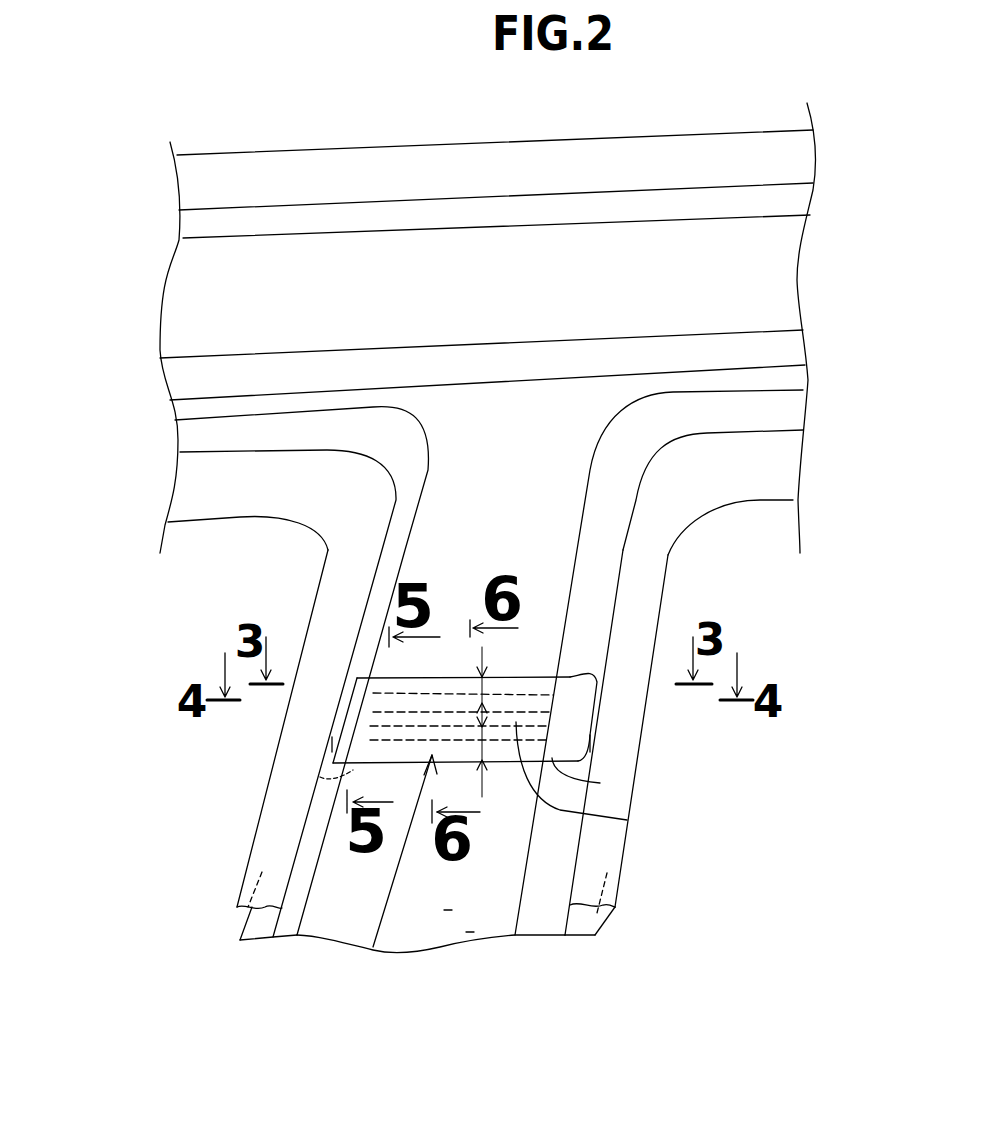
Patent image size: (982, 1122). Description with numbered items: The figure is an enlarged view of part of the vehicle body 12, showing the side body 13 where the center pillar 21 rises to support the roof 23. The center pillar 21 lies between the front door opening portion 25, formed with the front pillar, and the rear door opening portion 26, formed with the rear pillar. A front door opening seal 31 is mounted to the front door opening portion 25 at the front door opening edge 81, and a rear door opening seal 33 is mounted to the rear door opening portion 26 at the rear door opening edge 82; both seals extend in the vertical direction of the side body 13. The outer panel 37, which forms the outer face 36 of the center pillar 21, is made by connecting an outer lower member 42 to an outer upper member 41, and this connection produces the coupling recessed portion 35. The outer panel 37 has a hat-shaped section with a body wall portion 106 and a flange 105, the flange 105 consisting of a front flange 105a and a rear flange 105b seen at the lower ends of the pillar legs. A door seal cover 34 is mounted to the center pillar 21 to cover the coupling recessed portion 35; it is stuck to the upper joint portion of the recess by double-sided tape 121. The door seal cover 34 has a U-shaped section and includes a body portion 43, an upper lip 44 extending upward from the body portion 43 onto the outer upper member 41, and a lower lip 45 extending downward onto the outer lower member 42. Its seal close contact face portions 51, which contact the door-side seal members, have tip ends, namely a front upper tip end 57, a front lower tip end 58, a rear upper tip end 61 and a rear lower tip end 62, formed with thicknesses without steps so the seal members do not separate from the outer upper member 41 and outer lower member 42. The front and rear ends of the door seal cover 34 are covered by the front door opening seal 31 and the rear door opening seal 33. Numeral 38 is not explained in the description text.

The vehicle body 12 is at (141, 298).
The side body 13 is at (163, 635).
The center pillar 21 is at (373, 987).
The roof 23 is at (325, 143).
The front door opening portion 25 is at (198, 523).
The rear door opening portion 26 is at (767, 503).
The front door opening seal 31 is at (257, 798).
The rear door opening seal 33 is at (627, 850).
The door seal cover 34 is at (445, 675).
The coupling recessed portion 35 is at (367, 943).
The outer face 36 is at (448, 910).
The outer panel 37 is at (497, 937).
The upper dashed line 38 is at (452, 683).
The outer upper member 41 is at (433, 547).
The outer lower member 42 is at (343, 933).
The body portion 43 is at (548, 752).
The upper lip 44 is at (484, 683).
The lower lip 45 is at (480, 812).
The seal close contact face portion 51 is at (367, 707).
The front upper tip end 57 is at (390, 675).
The front lower tip end 58 is at (347, 778).
The rear upper tip end 61 is at (560, 676).
The rear lower tip end 62 is at (600, 783).
The front door opening edge 81 is at (240, 923).
The rear door opening edge 82 is at (600, 918).
The flange 105 is at (432, 969).
The front flange 105a is at (257, 937).
The rear flange 105b is at (582, 927).
The body wall portion 106 is at (470, 937).
The double-sided tape 121 is at (627, 820).